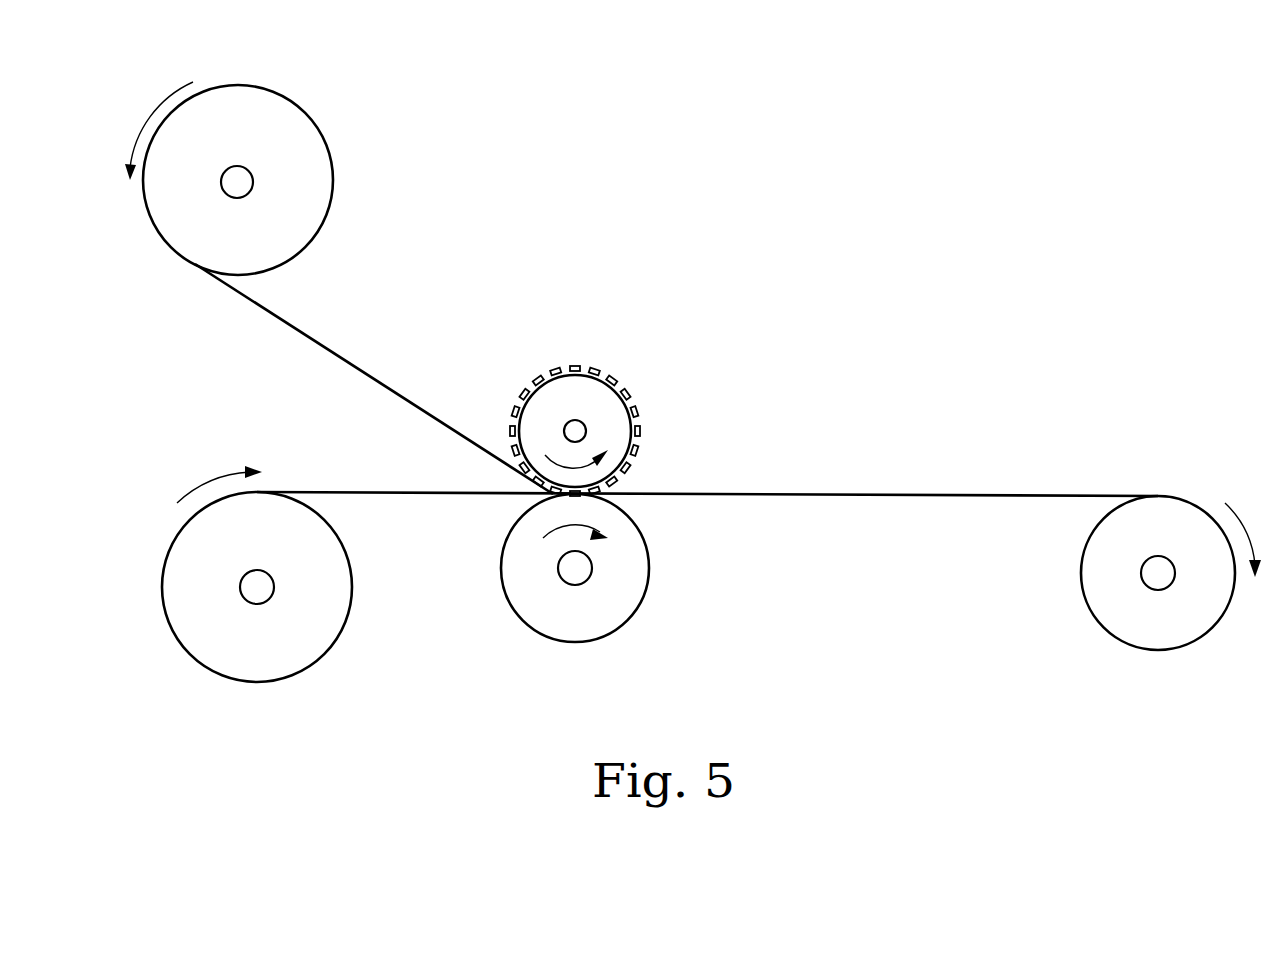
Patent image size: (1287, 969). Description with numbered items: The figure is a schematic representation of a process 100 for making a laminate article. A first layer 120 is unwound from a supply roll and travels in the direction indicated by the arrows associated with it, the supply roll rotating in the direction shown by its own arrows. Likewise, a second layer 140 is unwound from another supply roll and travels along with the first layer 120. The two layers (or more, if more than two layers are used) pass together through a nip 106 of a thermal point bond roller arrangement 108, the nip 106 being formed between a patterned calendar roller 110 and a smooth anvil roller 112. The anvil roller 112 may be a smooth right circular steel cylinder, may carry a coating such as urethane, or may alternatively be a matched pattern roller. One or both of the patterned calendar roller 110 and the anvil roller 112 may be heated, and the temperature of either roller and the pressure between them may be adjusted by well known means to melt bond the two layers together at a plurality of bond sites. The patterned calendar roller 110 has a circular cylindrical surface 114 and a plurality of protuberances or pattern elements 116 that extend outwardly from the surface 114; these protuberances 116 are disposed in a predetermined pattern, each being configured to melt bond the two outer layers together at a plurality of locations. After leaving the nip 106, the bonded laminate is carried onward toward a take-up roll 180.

The web processing system 100 is at (1066, 378).
The nip 106 is at (520, 505).
The thermal point bond roller arrangement 108 is at (609, 356).
The patterned calendar roller 110 is at (583, 394).
The smooth anvil roller 112 is at (603, 622).
The circular cylindrical surface 114 is at (522, 402).
The protuberances 116 is at (637, 452).
The first layer 120 is at (307, 333).
The second layer 140 is at (360, 493).
The take-up roll 180 is at (1173, 508).